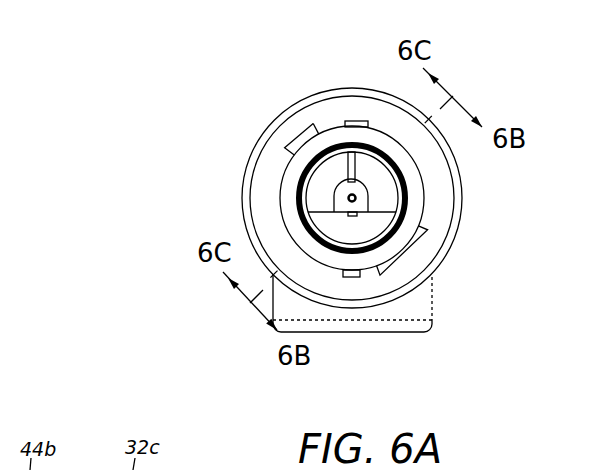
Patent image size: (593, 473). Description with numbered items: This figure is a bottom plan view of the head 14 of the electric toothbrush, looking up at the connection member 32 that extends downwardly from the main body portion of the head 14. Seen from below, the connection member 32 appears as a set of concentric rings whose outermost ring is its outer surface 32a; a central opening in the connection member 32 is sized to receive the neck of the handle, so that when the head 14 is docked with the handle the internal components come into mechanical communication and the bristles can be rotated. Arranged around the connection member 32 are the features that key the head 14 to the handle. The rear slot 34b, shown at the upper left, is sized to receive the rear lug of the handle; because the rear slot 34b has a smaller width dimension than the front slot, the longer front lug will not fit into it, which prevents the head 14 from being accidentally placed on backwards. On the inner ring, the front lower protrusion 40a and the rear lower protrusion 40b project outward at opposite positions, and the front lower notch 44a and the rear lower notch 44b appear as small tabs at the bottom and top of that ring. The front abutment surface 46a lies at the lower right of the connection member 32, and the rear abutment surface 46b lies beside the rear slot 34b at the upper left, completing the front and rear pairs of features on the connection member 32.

The head 14 is at (511, 299).
The connection member 32 is at (458, 180).
The outer surface 32a is at (421, 231).
The rear slot 34b is at (289, 159).
The front lower protrusion 40a is at (368, 270).
The rear lower protrusion 40b is at (332, 128).
The front lower notch 44a is at (350, 276).
The rear lower notch 44b is at (365, 127).
The front abutment surface 46a is at (400, 256).
The rear abutment surface 46b is at (307, 136).